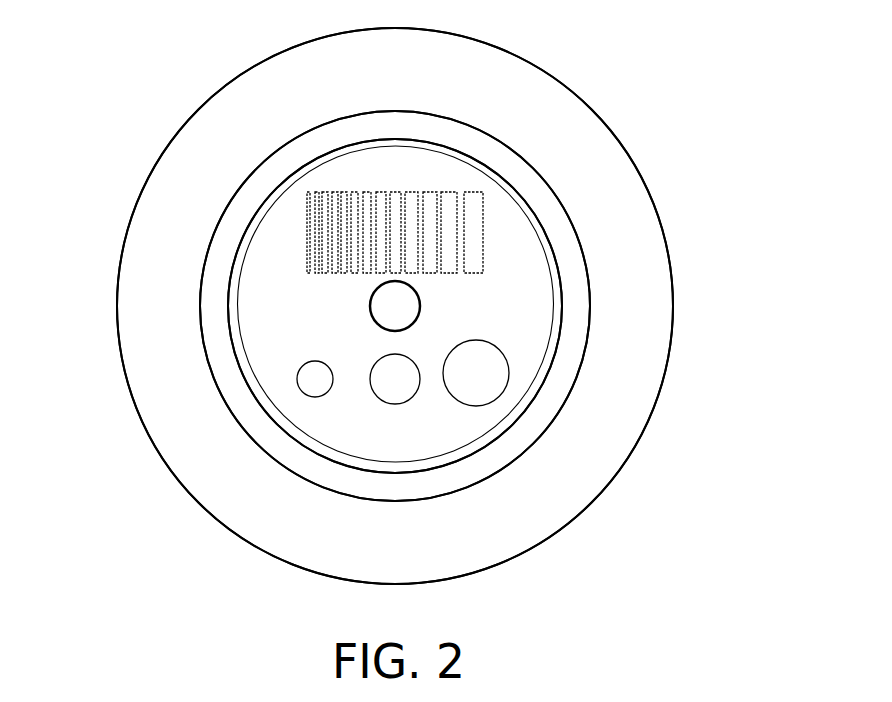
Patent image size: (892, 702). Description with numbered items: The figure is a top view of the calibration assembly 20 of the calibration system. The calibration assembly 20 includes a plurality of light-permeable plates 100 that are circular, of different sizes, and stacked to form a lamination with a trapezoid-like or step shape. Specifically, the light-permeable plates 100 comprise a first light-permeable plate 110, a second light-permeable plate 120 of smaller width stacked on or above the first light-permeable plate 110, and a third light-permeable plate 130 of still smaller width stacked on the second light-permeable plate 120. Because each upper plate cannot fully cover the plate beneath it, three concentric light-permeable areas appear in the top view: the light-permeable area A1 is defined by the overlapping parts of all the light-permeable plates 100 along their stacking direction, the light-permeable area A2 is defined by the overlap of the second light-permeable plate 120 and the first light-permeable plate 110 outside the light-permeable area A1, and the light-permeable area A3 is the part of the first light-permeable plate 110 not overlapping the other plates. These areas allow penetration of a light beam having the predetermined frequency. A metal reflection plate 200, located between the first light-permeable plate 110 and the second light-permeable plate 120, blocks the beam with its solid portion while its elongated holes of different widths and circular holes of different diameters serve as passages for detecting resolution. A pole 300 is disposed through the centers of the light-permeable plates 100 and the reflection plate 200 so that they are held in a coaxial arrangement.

The calibration assembly 20 is at (165, 82).
The light-permeable plates 100 is at (765, 197).
The first light-permeable plate 110 is at (642, 237).
The second light-permeable plate 120 is at (575, 293).
The third light-permeable plate 130 is at (557, 325).
The reflection plate 200 is at (492, 223).
The pole 300 is at (395, 306).
The light-permeable area A1 is at (220, 301).
The light-permeable area A2 is at (206, 333).
The light-permeable area A3 is at (153, 370).